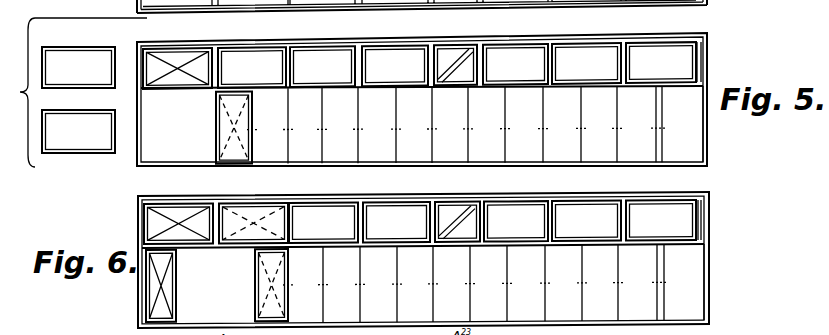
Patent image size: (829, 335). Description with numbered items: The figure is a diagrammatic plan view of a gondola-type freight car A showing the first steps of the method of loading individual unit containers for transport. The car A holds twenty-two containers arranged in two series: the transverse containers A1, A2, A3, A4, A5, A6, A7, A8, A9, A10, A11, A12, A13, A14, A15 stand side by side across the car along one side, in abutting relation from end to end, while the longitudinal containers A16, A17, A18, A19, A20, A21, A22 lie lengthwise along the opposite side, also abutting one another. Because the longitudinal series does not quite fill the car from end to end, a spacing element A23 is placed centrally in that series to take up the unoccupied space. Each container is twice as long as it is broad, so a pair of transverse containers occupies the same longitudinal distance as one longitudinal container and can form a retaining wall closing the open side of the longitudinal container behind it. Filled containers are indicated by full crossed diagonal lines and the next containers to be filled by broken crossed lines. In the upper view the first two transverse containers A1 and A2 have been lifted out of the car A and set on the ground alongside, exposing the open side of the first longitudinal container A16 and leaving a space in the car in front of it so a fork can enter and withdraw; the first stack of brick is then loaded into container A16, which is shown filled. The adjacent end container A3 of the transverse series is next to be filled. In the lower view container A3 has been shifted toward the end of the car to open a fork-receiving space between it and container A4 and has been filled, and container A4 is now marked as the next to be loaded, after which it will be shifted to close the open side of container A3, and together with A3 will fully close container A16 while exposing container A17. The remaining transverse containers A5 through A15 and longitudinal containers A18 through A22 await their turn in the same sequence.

In FIG. 5, the freight car A is at (206, 42).
In FIG. 6, the freight car A is at (215, 196).
In FIG. 5, the transverse container A1 is at (77, 53).
In FIG. 5, the transverse container A2 is at (75, 143).
In FIG. 5, the transverse container A3 is at (234, 128).
In FIG. 6, the transverse container A3 is at (161, 286).
In FIG. 5, the transverse container A4 is at (272, 125).
In FIG. 6, the transverse container A4 is at (271, 285).
In FIG. 5, the transverse container A5 is at (307, 125).
In FIG. 6, the transverse container A5 is at (309, 285).
In FIG. 5, the transverse container A6 is at (343, 125).
In FIG. 6, the transverse container A6 is at (346, 284).
In FIG. 5, the transverse container A7 is at (381, 125).
In FIG. 6, the transverse container A7 is at (382, 284).
In FIG. 5, the transverse container A8 is at (417, 125).
In FIG. 6, the transverse container A8 is at (419, 284).
In FIG. 5, the transverse container A9 is at (453, 125).
In FIG. 6, the transverse container A9 is at (454, 284).
In FIG. 5, the transverse container A10 is at (490, 125).
In FIG. 6, the transverse container A10 is at (491, 283).
In FIG. 5, the transverse container A11 is at (527, 125).
In FIG. 6, the transverse container A11 is at (528, 283).
In FIG. 5, the transverse container A12 is at (565, 124).
In FIG. 6, the transverse container A12 is at (566, 283).
In FIG. 5, the transverse container A13 is at (601, 124).
In FIG. 6, the transverse container A13 is at (604, 283).
In FIG. 5, the transverse container A14 is at (641, 124).
In FIG. 6, the transverse container A14 is at (644, 282).
In FIG. 5, the transverse container A15 is at (686, 124).
In FIG. 6, the transverse container A15 is at (687, 282).
In FIG. 5, the longitudinal container A16 is at (177, 68).
In FIG. 6, the longitudinal container A16 is at (178, 223).
In FIG. 5, the longitudinal container A17 is at (252, 67).
In FIG. 6, the longitudinal container A17 is at (253, 223).
In FIG. 5, the longitudinal container A18 is at (322, 66).
In FIG. 6, the longitudinal container A18 is at (323, 222).
In FIG. 5, the longitudinal container A19 is at (395, 65).
In FIG. 6, the longitudinal container A19 is at (396, 222).
In FIG. 5, the longitudinal container A20 is at (515, 64).
In FIG. 6, the longitudinal container A20 is at (516, 221).
In FIG. 5, the longitudinal container A21 is at (586, 63).
In FIG. 6, the longitudinal container A21 is at (586, 221).
In FIG. 5, the longitudinal container A22 is at (661, 62).
In FIG. 6, the longitudinal container A22 is at (661, 220).
In FIG. 5, the spacing element A23 is at (454, 45).
In FIG. 6, the spacing element A23 is at (452, 203).